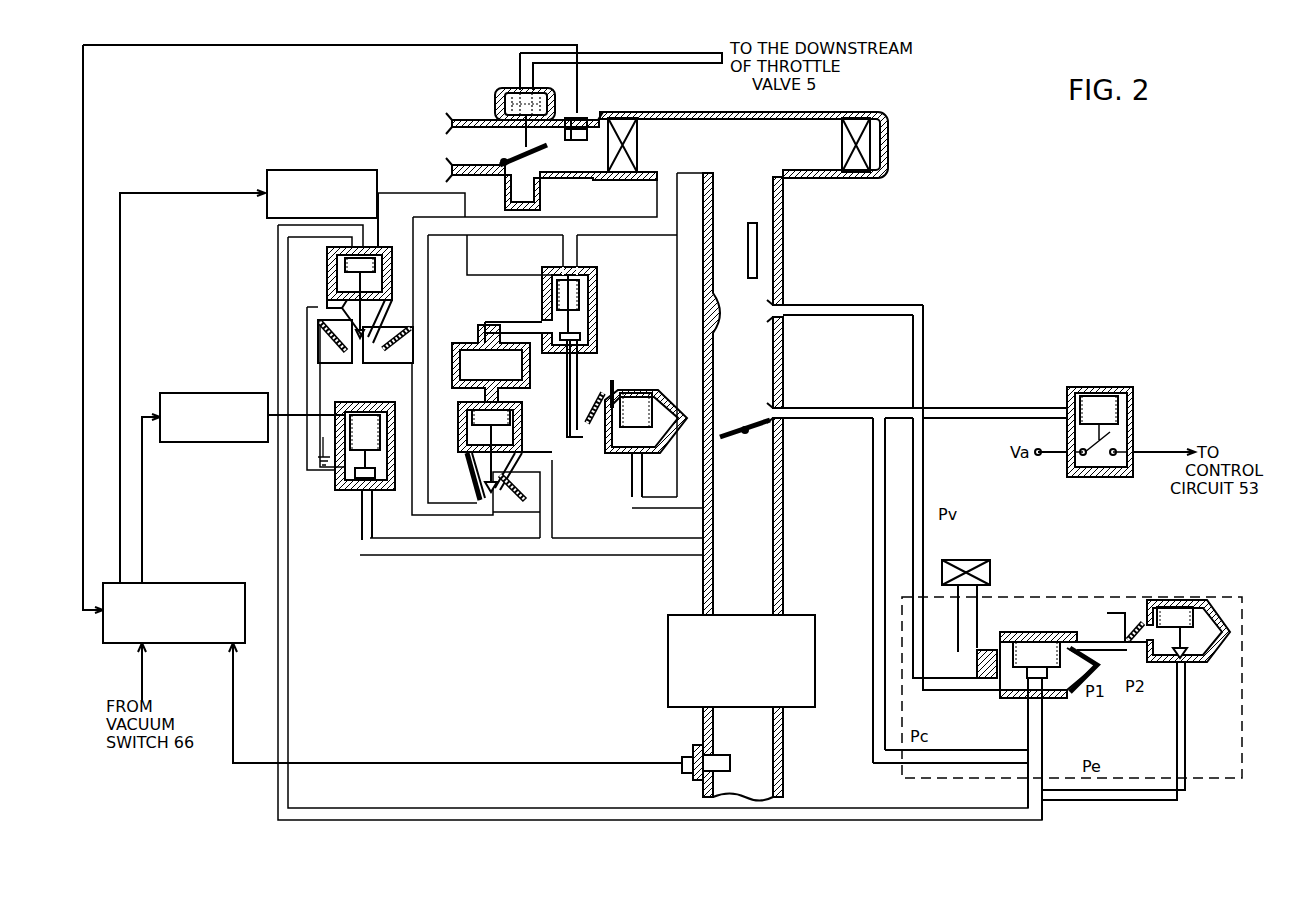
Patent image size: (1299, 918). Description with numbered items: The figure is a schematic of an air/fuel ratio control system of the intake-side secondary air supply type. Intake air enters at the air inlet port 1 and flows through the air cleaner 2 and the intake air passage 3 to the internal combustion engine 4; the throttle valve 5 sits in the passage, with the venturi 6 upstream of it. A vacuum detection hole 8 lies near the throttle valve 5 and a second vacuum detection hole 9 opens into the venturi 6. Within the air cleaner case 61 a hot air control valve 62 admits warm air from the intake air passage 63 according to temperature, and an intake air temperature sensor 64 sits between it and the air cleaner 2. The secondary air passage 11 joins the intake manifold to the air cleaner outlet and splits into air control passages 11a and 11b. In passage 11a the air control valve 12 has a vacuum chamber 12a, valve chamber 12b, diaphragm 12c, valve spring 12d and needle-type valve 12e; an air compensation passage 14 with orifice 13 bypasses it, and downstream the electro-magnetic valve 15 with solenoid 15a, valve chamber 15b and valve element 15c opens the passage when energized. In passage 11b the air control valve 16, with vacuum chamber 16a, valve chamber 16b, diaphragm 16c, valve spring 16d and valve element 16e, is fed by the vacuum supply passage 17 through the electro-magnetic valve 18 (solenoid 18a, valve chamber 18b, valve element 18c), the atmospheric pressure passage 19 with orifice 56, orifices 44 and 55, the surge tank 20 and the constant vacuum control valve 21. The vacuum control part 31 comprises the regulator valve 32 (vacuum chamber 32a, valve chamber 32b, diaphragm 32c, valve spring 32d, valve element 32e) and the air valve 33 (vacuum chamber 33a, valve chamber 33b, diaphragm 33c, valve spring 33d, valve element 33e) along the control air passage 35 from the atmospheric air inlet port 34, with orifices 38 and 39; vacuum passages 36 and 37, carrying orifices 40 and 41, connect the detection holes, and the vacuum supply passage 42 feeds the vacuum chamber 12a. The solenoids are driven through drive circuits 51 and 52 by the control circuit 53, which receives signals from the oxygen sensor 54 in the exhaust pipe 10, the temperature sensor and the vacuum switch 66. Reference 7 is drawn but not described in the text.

The air inlet port 1 is at (452, 152).
The air cleaner 2 is at (628, 120).
The intake air passage 3 is at (780, 385).
The internal combustion engine 4 is at (668, 670).
The throttle valve 5 is at (740, 427).
The venturi 6 is at (721, 325).
The port 7 is at (758, 258).
The vacuum detection hole 8 is at (770, 412).
The second vacuum detection hole 9 is at (770, 312).
The exhaust pipe 10 is at (783, 752).
The air intake side secondary air passage 11 is at (428, 290).
The air control passage 11a is at (360, 378).
The air control passage 11b is at (552, 520).
The air control valve 12 is at (313, 258).
The vacuum chamber 12a is at (380, 247).
The valve chamber 12b is at (380, 320).
The diaphragm 12c is at (380, 285).
The valve spring 12d is at (337, 270).
The needle-type valve 12e is at (372, 331).
The orifice 13 is at (335, 363).
The air compensation passage 14 is at (335, 342).
The electro-magnetic valve 15 is at (352, 500).
The solenoid 15a is at (365, 415).
The valve chamber 15b is at (345, 492).
The valve element 15c is at (372, 480).
The air control valve 16 is at (522, 440).
The vacuum chamber 16a is at (510, 420).
The valve chamber 16b is at (516, 501).
The diaphragm 16c is at (510, 440).
The valve spring 16d is at (470, 498).
The needle type valve element 16e is at (478, 500).
The vacuum supply passage 17 is at (508, 320).
The electro-magnetic valve 18 is at (640, 285).
The solenoid 18a is at (580, 290).
The valve chamber 18b is at (588, 312).
The valve element 18c is at (582, 336).
The atmospheric pressure passage 19 is at (575, 250).
The surge tank 20 is at (388, 346).
The constant vacuum control valve 21 is at (650, 390).
The vacuum control part 31 is at (1088, 600).
The regulator valve 32 is at (1050, 632).
The vacuum chamber 32a is at (980, 665).
The valve chamber 32b is at (1025, 698).
The diaphragm 32c is at (1003, 688).
The valve spring 32d is at (1027, 642).
The valve element 32e is at (1048, 675).
The air valve 33 is at (1225, 665).
The vacuum chamber 33a is at (1215, 622).
The valve chamber 33b is at (1215, 645).
The diaphragm 33c is at (1180, 655).
The valve spring 33d is at (1145, 625).
The valve element 33e is at (1185, 662).
The atmospheric air inlet port 34 is at (963, 560).
The control air passage 35 is at (958, 642).
The vacuum passage 36 is at (873, 530).
The vacuum passage 37 is at (924, 462).
The orifice 38 is at (980, 648).
The orifice 39 is at (1100, 640).
The orifice 40 is at (1028, 752).
The orifice 41 is at (958, 690).
The vacuum supply passage 42 is at (288, 715).
The orifice 44 is at (580, 365).
The drive circuit 51 is at (175, 393).
The drive circuit 52 is at (288, 170).
The control circuit 53 is at (192, 583).
The oxygen sensor 54 is at (690, 752).
The orifice 55 is at (502, 362).
The orifice 56 is at (565, 255).
The air cleaner case 61 is at (690, 112).
The hot air control valve 62 is at (495, 95).
The intake air passage 63 is at (535, 200).
The intake air temperature sensor 64 is at (578, 118).
The vacuum switch 66 is at (1133, 405).